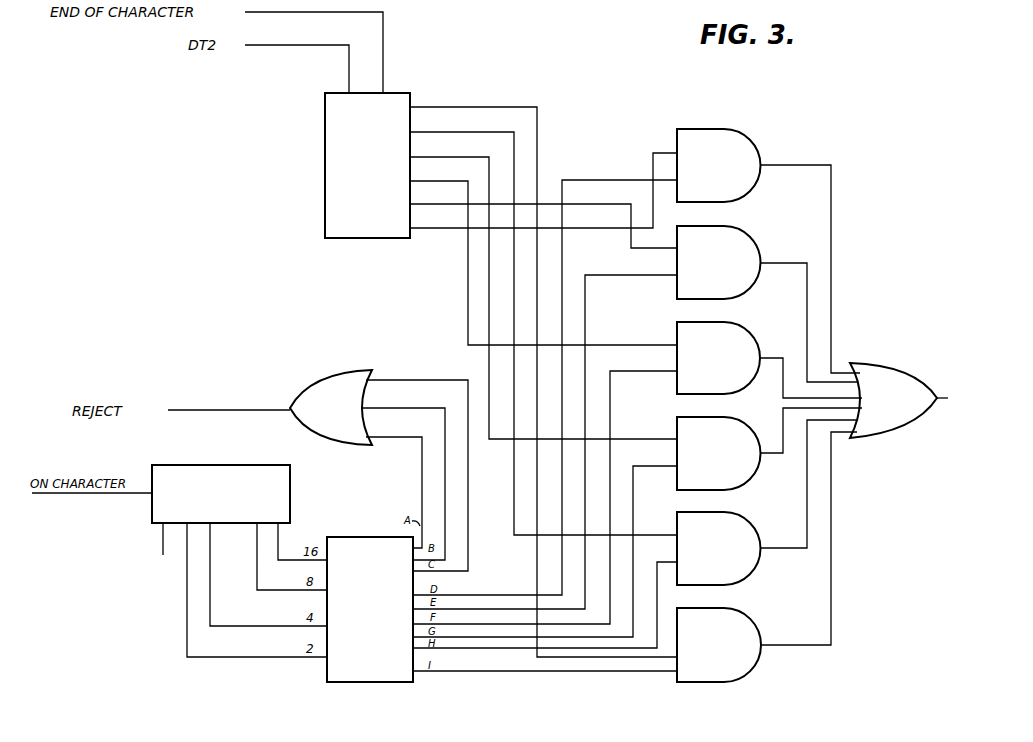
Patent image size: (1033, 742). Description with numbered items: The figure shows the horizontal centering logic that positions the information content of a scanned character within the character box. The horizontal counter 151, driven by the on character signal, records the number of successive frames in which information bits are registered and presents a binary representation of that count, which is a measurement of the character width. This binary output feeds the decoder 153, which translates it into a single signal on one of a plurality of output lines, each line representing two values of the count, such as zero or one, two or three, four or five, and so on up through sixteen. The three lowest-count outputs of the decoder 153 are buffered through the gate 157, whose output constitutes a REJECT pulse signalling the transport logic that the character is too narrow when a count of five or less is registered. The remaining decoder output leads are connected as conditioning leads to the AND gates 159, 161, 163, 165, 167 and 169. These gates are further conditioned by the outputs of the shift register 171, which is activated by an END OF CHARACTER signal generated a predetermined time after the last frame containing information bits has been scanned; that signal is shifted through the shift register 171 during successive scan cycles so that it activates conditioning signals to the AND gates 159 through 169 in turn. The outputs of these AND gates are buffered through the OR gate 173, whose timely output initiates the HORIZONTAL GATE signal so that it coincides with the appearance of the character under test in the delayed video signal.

The horizontal counter 151 is at (150, 523).
The decoder 153 is at (413, 682).
The gate 157 is at (340, 445).
The AND gate 159 is at (752, 140).
The AND gate 161 is at (750, 237).
The AND gate 163 is at (750, 333).
The AND gate 165 is at (750, 478).
The AND gate 167 is at (750, 570).
The AND gate 169 is at (752, 670).
The shift register 171 is at (325, 238).
The OR gate 173 is at (878, 440).